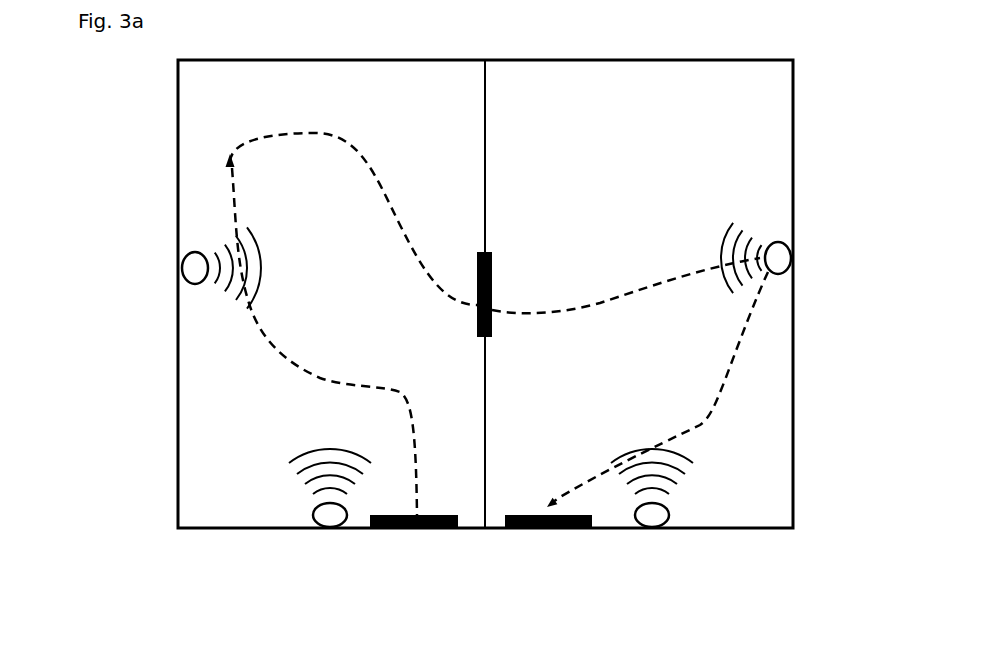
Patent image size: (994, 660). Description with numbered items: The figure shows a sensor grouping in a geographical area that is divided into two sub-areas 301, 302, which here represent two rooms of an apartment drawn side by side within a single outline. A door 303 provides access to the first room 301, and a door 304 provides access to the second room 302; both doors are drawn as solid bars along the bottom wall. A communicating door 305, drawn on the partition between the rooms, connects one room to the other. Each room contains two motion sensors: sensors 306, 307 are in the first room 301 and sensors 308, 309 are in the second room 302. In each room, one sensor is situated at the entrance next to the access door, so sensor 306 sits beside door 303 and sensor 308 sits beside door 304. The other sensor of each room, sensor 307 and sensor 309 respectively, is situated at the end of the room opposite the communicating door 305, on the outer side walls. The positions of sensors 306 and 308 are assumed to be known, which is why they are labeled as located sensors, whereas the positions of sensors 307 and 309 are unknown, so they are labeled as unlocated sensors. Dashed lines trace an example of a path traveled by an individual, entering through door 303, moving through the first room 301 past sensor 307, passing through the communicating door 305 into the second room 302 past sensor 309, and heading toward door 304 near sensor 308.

The first sub-area 301 is at (238, 395).
The second sub-area 302 is at (765, 337).
The door 303 is at (413, 530).
The door 304 is at (553, 530).
The communicating door 305 is at (493, 262).
The motion sensor 306 is at (310, 523).
The motion sensor 307 is at (180, 270).
The motion sensor 308 is at (672, 518).
The motion sensor 309 is at (796, 262).